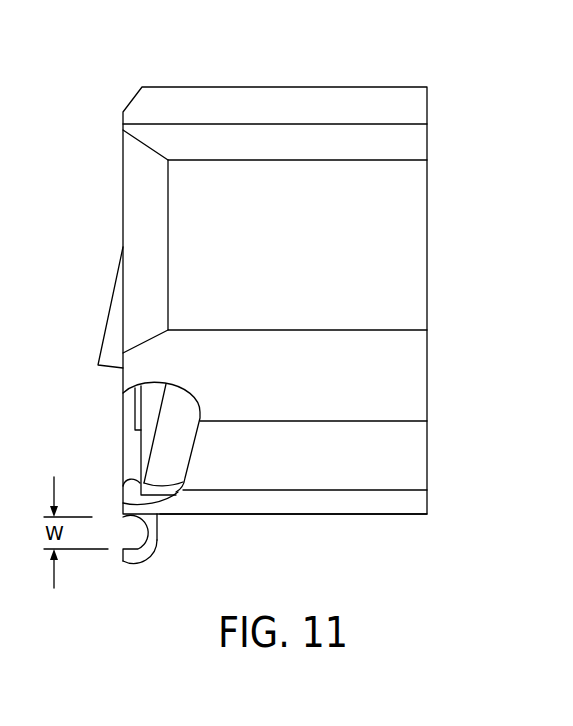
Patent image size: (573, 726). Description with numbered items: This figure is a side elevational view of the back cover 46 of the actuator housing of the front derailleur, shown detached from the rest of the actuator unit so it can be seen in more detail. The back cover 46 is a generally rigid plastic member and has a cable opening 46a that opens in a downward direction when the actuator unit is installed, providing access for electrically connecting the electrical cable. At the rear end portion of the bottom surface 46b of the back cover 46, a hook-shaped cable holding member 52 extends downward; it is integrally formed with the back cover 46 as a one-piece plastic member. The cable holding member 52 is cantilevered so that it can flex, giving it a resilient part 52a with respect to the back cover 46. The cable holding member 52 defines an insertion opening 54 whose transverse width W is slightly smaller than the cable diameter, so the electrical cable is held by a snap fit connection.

The back cover 46 is at (405, 51).
The cable opening 46a is at (153, 393).
The bottom surface 46b is at (225, 514).
The cable holding member 52 is at (134, 564).
The resilient part 52a is at (148, 555).
The insertion opening 54 is at (123, 533).